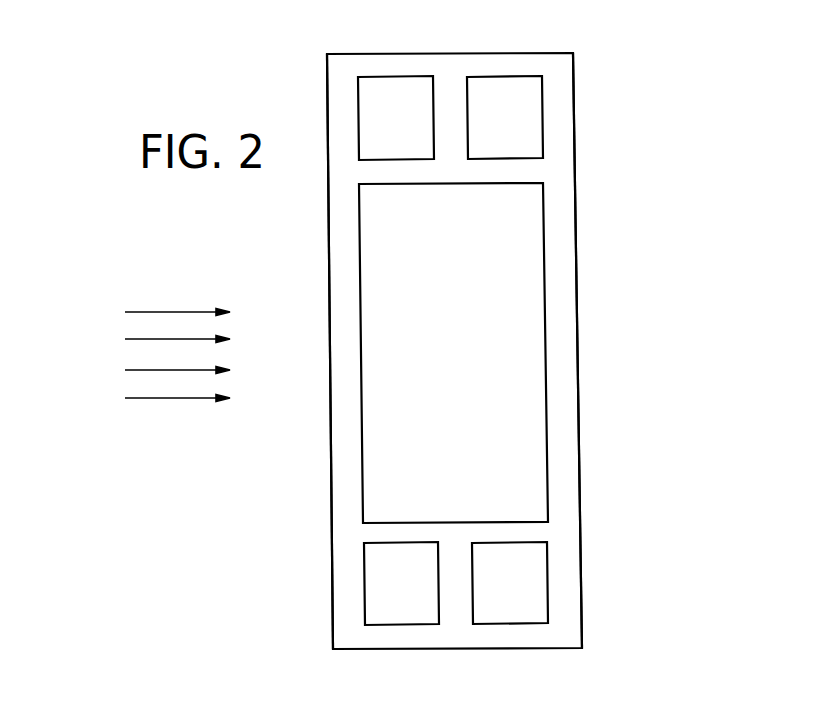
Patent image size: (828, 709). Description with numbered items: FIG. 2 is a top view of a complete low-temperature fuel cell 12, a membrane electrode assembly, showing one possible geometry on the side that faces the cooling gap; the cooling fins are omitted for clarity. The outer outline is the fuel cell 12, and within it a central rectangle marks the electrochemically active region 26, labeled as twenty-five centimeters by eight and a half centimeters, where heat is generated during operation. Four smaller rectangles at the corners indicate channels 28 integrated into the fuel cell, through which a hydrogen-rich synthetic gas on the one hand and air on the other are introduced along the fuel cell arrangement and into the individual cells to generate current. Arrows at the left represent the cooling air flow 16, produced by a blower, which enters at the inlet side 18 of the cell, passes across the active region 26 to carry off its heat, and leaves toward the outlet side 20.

The low-temperature fuel cell 12 is at (560, 275).
The cooling air flow 16 is at (158, 400).
The inlet side 18 is at (326, 227).
The outlet side 20 is at (580, 227).
The electrochemically active region 26 is at (530, 410).
The channels 28 is at (366, 113).